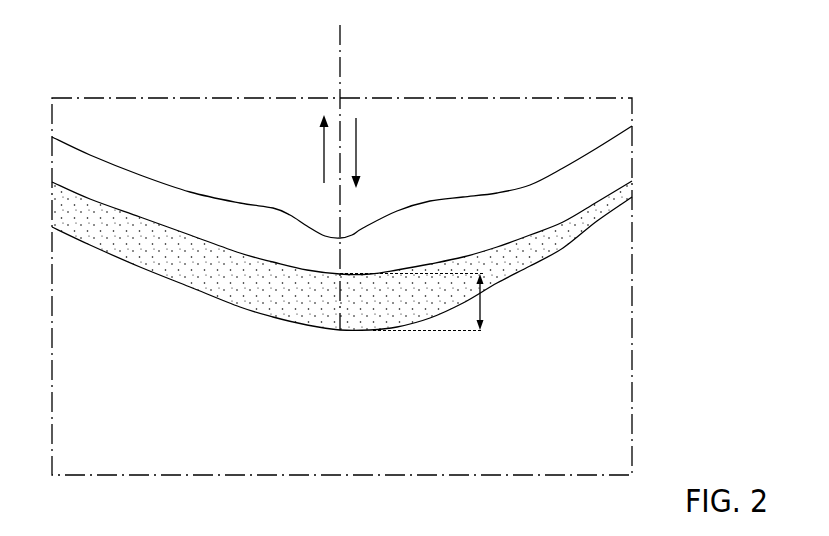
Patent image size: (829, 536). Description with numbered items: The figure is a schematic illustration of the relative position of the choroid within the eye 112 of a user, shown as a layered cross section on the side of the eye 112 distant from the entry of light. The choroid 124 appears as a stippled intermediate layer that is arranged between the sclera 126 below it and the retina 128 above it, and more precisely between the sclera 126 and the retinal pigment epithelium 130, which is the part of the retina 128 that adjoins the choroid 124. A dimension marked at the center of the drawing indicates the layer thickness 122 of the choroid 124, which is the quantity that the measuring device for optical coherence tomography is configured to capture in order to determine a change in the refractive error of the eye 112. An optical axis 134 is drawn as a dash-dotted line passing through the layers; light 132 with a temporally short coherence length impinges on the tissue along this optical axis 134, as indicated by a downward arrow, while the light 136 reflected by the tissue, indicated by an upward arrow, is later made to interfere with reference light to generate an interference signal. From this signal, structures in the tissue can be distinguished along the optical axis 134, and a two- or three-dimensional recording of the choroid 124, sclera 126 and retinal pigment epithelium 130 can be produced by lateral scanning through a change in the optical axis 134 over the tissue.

The eye 112 is at (669, 141).
The layer thickness 122 is at (483, 300).
The choroid 124 is at (251, 294).
The sclera 126 is at (251, 386).
The retina 128 is at (279, 238).
The retinal pigment epithelium 130 is at (342, 183).
The light 132 is at (360, 145).
The optical axis 134 is at (342, 56).
The reflected light 136 is at (321, 145).